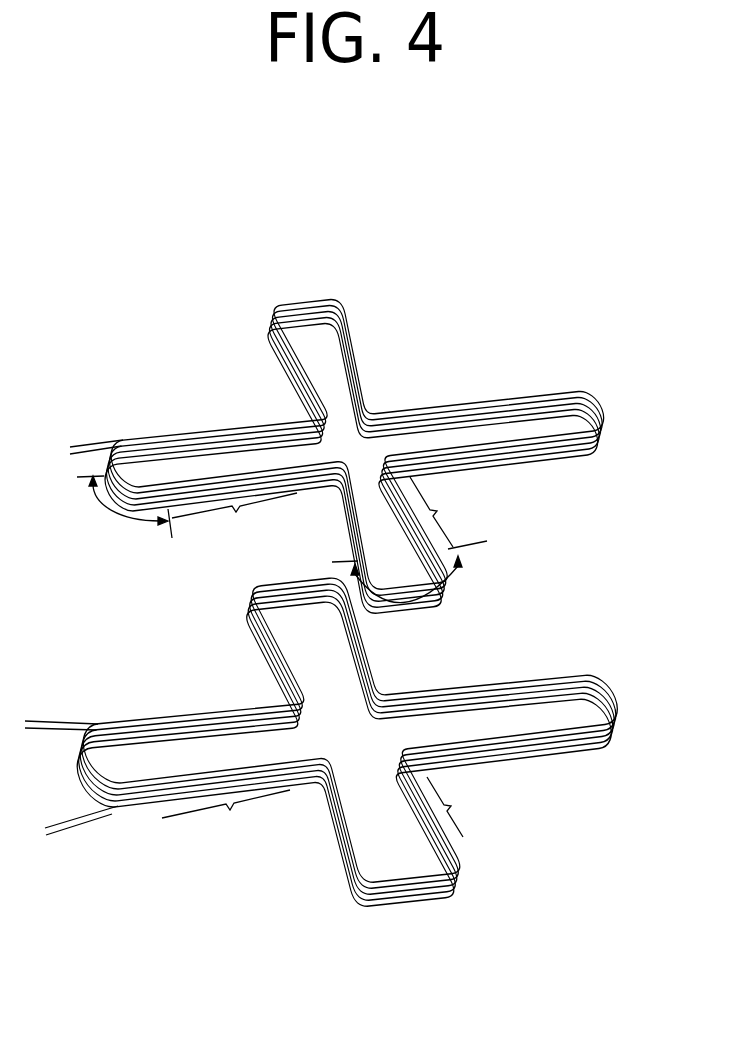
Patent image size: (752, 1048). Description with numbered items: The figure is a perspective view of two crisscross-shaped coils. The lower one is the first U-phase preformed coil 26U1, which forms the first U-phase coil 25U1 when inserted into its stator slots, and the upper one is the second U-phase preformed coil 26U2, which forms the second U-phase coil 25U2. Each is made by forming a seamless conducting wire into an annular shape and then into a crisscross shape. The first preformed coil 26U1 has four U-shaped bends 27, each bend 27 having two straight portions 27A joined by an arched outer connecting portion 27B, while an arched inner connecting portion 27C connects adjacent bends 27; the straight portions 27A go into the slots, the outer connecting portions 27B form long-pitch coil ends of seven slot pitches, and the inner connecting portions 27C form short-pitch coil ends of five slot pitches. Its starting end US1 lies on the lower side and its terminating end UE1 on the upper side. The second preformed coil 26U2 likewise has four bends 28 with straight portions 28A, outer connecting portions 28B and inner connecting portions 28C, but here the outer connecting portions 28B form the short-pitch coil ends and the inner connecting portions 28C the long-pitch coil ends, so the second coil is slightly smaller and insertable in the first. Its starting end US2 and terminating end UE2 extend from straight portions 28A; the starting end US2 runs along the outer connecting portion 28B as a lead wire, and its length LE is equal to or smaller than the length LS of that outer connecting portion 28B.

The second U-phase preformed coil 26U2 is at (607, 368).
The second U-phase coil 25U2 is at (356, 456).
The U-shaped bend 28 is at (143, 473).
The straight portion 28A is at (328, 512).
The outer connecting portion 28B is at (462, 600).
The inner connecting portion 28C is at (323, 466).
The terminating end UE2 is at (91, 446).
The starting end US2 is at (109, 485).
The length of the starting end LE is at (124, 512).
The length of the outer connecting portion LS is at (409, 590).
The first U-phase preformed coil 26U1 is at (598, 649).
The first U-phase coil 25U1 is at (348, 742).
The U-shaped bend 27 is at (151, 778).
The straight portion 27A is at (328, 808).
The outer connecting portion 27B is at (82, 767).
The inner connecting portion 27C is at (312, 761).
The terminating end UE1 is at (38, 726).
The starting end US1 is at (64, 830).